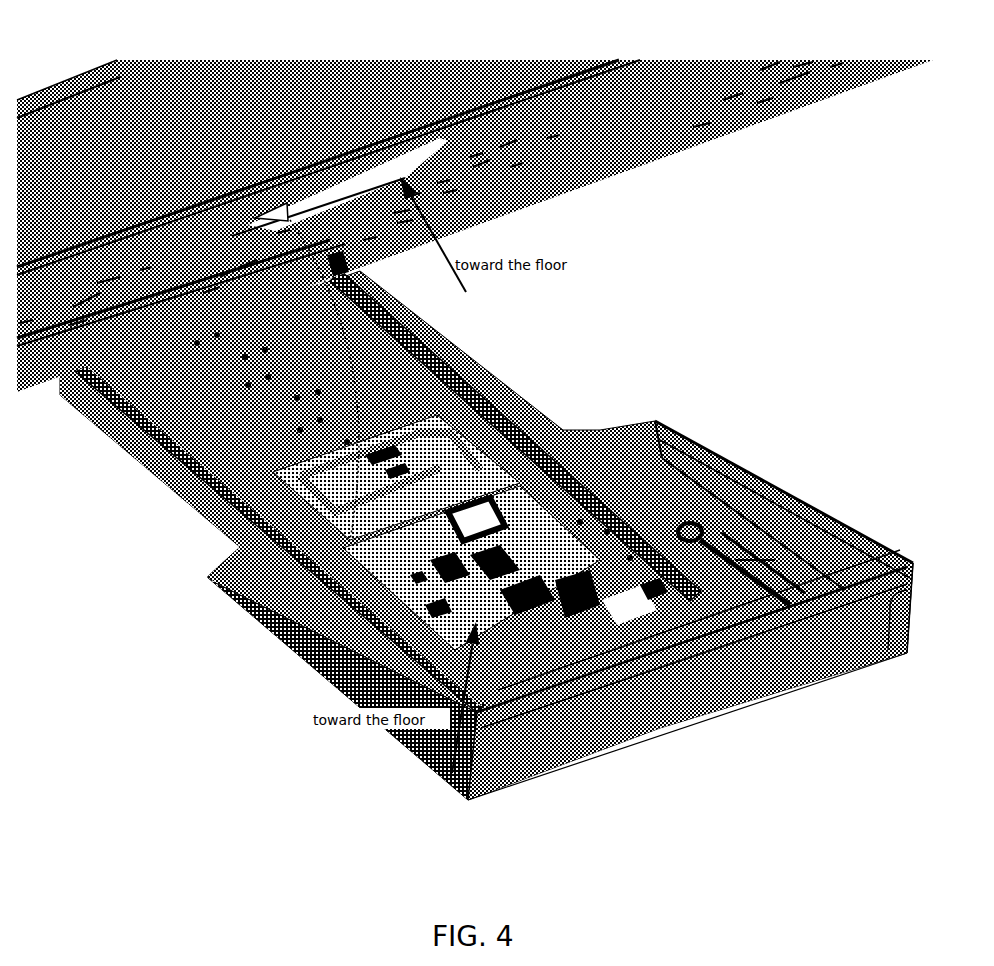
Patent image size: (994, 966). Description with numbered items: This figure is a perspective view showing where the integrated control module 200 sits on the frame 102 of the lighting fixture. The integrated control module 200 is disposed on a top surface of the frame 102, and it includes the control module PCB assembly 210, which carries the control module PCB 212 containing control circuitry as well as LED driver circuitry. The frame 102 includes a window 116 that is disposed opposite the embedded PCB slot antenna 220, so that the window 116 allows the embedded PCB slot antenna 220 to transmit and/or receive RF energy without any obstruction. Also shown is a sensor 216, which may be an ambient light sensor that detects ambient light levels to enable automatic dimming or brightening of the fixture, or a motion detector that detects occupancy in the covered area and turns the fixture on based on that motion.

The frame 102 is at (596, 163).
The window 116 is at (347, 187).
The integrated control module 200 is at (484, 535).
The control module PCB assembly 210 is at (422, 392).
The control module PCB 212 is at (180, 387).
The sensor 216 is at (660, 657).
The embedded PCB slot antenna 220 is at (427, 460).